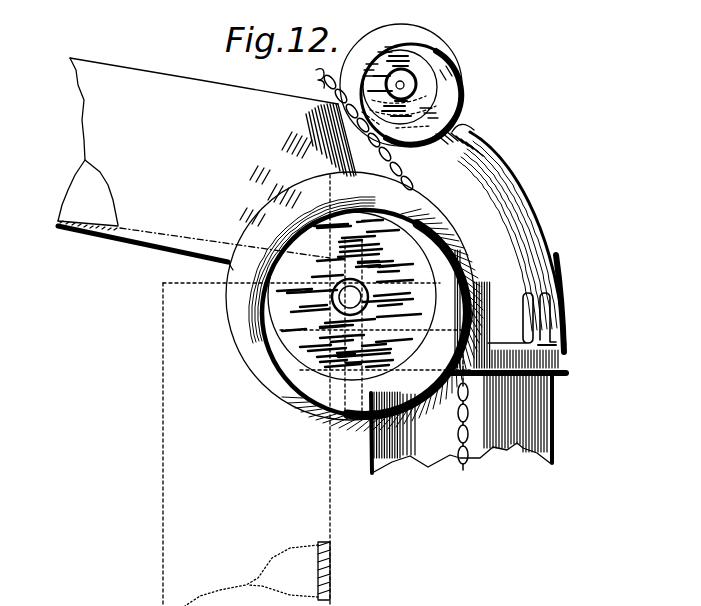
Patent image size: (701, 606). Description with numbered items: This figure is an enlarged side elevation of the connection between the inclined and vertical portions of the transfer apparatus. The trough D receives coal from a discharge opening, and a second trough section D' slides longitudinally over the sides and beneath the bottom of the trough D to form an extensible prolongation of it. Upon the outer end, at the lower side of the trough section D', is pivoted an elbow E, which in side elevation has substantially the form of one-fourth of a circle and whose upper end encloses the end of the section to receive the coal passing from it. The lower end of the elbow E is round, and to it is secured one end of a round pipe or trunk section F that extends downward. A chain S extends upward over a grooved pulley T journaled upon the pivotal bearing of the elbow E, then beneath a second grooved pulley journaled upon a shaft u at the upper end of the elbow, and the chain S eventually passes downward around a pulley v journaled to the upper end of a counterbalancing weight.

The chain S is at (315, 72).
The shaft u is at (402, 82).
The pulley v is at (460, 92).
The second trough section D' is at (207, 164).
The grooved pulley T is at (354, 301).
The elbow E is at (501, 248).
The trunk section F is at (475, 453).
The trough D is at (316, 390).